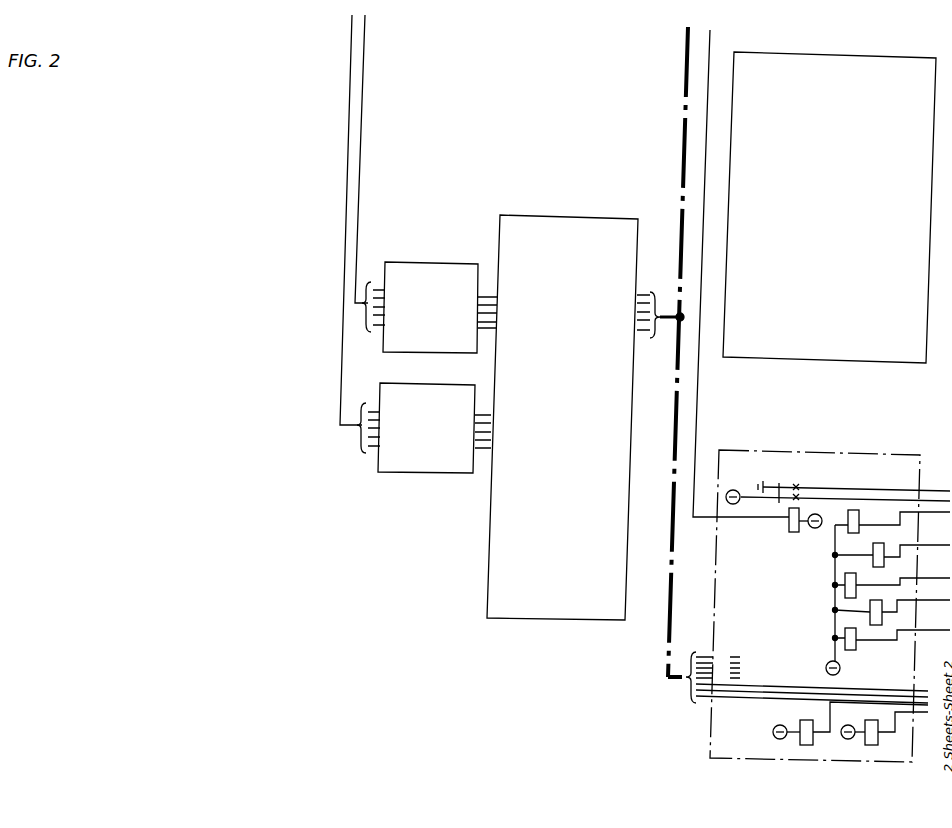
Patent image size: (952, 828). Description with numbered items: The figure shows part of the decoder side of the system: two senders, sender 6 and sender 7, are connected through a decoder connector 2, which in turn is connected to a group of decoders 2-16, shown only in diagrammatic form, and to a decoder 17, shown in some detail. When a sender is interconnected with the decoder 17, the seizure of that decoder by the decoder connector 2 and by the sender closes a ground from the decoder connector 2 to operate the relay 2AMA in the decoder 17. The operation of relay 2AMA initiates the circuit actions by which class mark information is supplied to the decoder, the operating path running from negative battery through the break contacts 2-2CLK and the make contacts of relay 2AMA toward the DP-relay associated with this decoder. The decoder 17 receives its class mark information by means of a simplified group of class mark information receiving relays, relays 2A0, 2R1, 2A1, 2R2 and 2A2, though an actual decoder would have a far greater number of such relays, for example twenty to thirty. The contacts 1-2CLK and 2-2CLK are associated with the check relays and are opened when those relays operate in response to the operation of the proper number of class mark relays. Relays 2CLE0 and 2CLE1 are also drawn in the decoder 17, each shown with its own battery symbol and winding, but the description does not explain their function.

The sender 6 is at (429, 307).
The sender 7 is at (424, 428).
The decoder connector 2 is at (573, 417).
The decoders 2-16 is at (829, 207).
The decoder 17 is at (818, 599).
The check relay contacts 1-2CLK is at (838, 486).
The check relay contacts 2-2CLK is at (768, 512).
The relay 2AMA is at (798, 530).
The class mark information receiving relay 2A0 is at (892, 518).
The class mark information receiving relay 2R1 is at (892, 548).
The class mark information receiving relay 2A1 is at (892, 578).
The class mark information receiving relay 2R2 is at (892, 604).
The class mark information receiving relay 2A2 is at (892, 630).
The relay 2CLE0 is at (850, 723).
The relay 2CLE1 is at (884, 723).